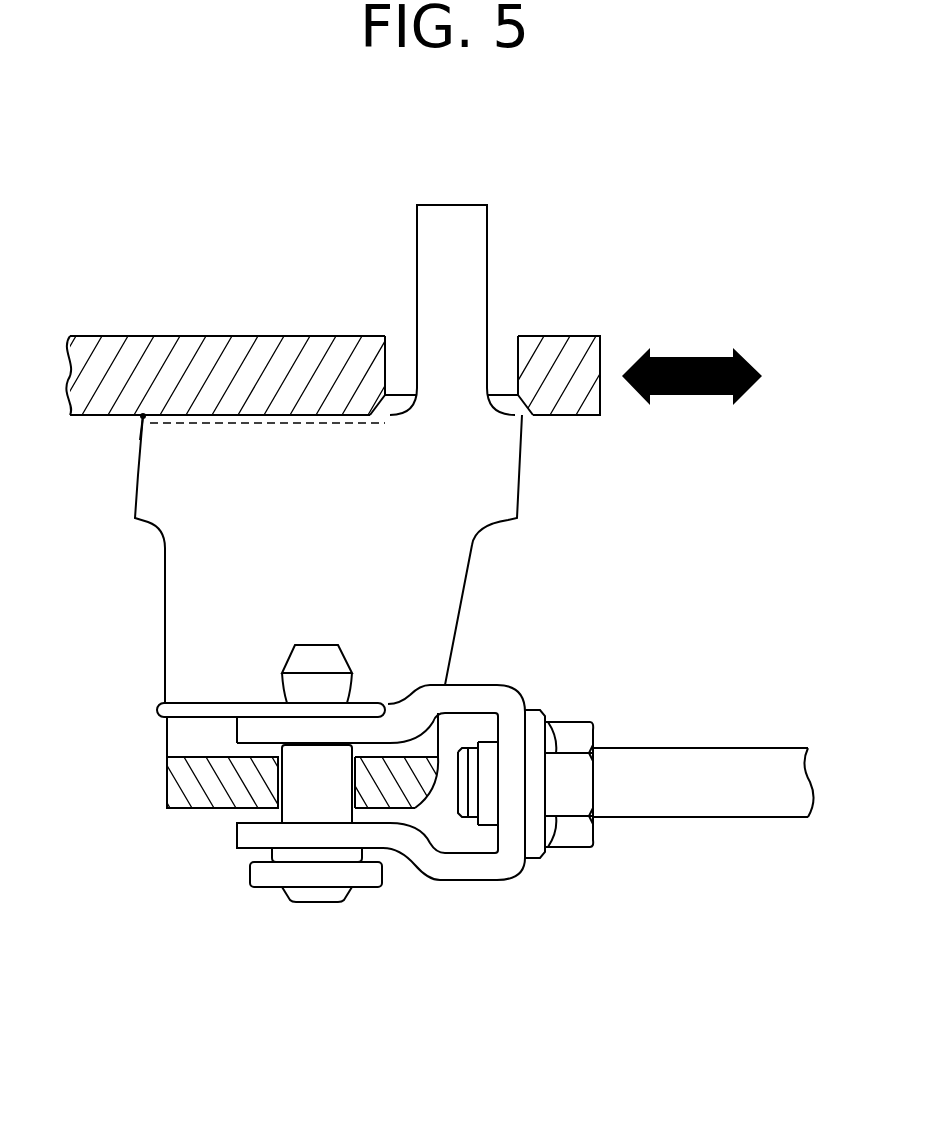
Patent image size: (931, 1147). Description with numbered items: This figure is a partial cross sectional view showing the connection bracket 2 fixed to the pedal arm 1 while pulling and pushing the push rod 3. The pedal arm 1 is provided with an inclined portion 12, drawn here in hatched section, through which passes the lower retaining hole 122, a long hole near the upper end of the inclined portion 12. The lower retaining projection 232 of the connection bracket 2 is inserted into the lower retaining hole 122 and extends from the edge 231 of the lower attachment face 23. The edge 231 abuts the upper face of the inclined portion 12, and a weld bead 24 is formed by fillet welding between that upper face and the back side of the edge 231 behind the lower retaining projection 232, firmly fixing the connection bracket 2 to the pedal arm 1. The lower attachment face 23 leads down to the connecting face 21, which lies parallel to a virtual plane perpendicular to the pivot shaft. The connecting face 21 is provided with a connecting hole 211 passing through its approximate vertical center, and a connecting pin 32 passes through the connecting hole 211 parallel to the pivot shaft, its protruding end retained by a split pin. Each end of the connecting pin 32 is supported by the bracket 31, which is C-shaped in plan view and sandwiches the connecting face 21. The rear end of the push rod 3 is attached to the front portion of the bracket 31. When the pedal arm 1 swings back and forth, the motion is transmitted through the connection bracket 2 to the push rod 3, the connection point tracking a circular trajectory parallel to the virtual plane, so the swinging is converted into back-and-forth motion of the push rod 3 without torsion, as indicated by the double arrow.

The pedal arm 1 is at (326, 336).
The inclined portion 12 is at (280, 345).
The lower retaining hole 122 is at (498, 342).
The connection bracket 2 is at (353, 450).
The connecting face 21 is at (275, 788).
The connecting hole 211 is at (272, 779).
The lower attachment face 23 is at (178, 608).
The weld bead 24 is at (141, 418).
The edge of the lower attachment face 231 is at (246, 421).
The lower retaining projection 232 is at (481, 237).
The push rod 3 is at (680, 814).
The bracket 31 is at (455, 877).
The connecting pin 32 is at (312, 893).